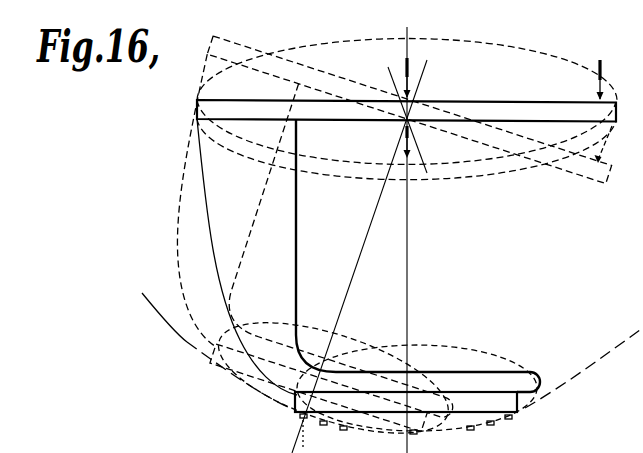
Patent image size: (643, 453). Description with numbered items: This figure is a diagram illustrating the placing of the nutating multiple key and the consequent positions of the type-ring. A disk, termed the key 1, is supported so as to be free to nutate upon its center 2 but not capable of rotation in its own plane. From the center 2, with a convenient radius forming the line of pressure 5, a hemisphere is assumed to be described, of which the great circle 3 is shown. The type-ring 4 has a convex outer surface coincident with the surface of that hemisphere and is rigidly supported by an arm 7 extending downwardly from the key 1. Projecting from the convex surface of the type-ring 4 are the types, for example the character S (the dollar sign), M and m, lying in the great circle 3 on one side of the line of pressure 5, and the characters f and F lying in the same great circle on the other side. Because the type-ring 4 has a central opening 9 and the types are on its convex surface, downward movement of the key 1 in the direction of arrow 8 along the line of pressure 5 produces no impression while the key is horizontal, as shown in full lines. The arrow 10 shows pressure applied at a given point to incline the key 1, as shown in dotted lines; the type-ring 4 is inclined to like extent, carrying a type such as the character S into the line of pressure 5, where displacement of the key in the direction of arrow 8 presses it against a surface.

The key 1 is at (538, 108).
The center 2 is at (410, 120).
The great circle 3 is at (381, 231).
The type-ring 4 is at (363, 388).
The line of pressure 5 is at (359, 240).
The arm 7 is at (377, 252).
The arrow 8 is at (415, 72).
The central opening 9 is at (437, 372).
The arrow 10 is at (410, 148).
The type F is at (323, 425).
The type f is at (345, 430).
The type m is at (472, 430).
The type M is at (490, 425).
The type $ S is at (508, 419).